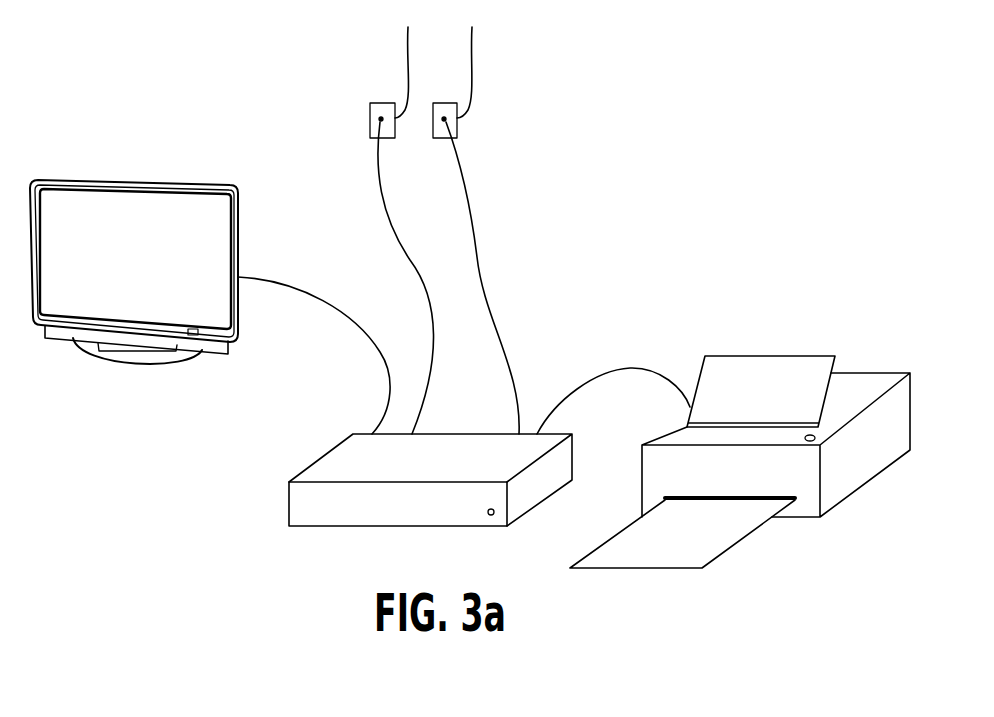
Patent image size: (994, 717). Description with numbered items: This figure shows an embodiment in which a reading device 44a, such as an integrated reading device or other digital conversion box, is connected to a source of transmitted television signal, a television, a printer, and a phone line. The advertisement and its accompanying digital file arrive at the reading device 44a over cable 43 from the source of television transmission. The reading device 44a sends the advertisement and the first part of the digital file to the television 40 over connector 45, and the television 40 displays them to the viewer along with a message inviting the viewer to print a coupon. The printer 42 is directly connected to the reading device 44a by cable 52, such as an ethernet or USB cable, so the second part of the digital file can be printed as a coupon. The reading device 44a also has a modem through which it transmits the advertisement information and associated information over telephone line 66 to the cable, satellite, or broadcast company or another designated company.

The television 40 is at (240, 190).
The printer 42 is at (868, 483).
The cable 43 is at (485, 59).
The reading device 44a is at (320, 459).
The connector 45 is at (326, 326).
The cable 52 is at (644, 355).
The telephone line 66 is at (392, 50).